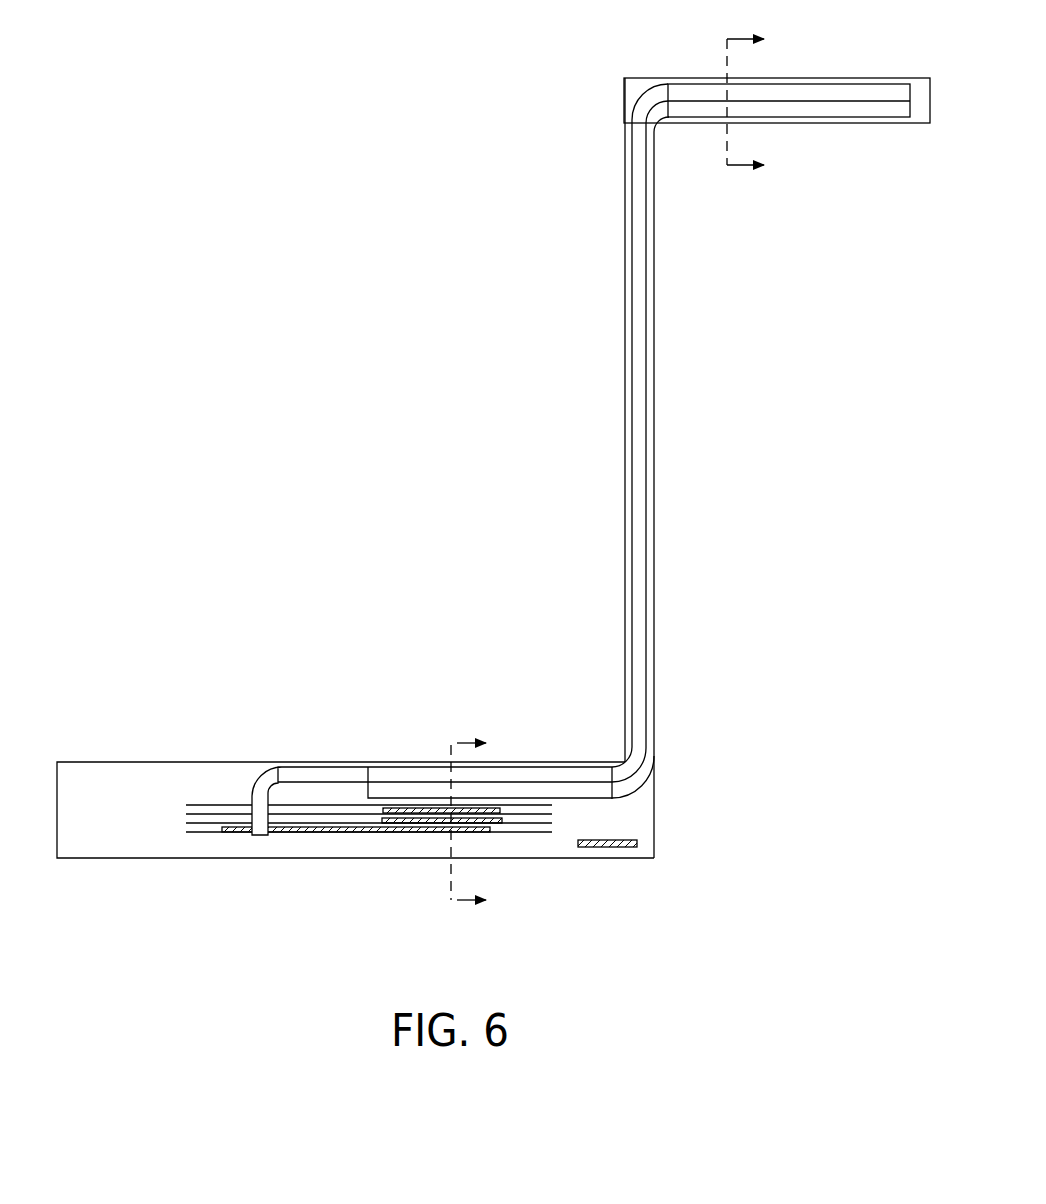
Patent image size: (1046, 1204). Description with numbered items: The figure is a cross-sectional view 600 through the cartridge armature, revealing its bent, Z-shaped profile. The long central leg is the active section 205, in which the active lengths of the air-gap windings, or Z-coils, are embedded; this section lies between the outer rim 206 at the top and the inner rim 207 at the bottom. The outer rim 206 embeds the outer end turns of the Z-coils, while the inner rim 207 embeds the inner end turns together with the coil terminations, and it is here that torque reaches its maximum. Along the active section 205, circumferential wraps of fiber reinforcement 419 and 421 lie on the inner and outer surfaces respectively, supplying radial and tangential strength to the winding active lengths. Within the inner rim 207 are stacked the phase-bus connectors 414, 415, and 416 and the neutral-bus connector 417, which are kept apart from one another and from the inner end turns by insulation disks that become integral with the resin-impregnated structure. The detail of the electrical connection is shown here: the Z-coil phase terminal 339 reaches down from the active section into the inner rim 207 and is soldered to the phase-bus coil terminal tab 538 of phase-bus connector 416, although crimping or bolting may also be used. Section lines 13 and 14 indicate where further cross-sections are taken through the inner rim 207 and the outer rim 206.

The flex circuit assembly 600 is at (461, 367).
The active section 205 is at (661, 440).
The outer rim 206 is at (782, 77).
The inner rim 207 is at (147, 762).
The Z-coil phase terminal 339 is at (244, 765).
The phase-bus connector 414 is at (506, 810).
The phase-bus connector 415 is at (479, 830).
The phase-bus connector 416 is at (422, 834).
The neutral-bus connector 417 is at (623, 848).
The circumferential wrap of fiber reinforcement 419 is at (624, 289).
The circumferential wrap of fiber reinforcement 421 is at (655, 498).
The phase-bus coil terminal tab 538 is at (311, 838).
The section line 13 is at (467, 823).
The section line 14 is at (744, 104).